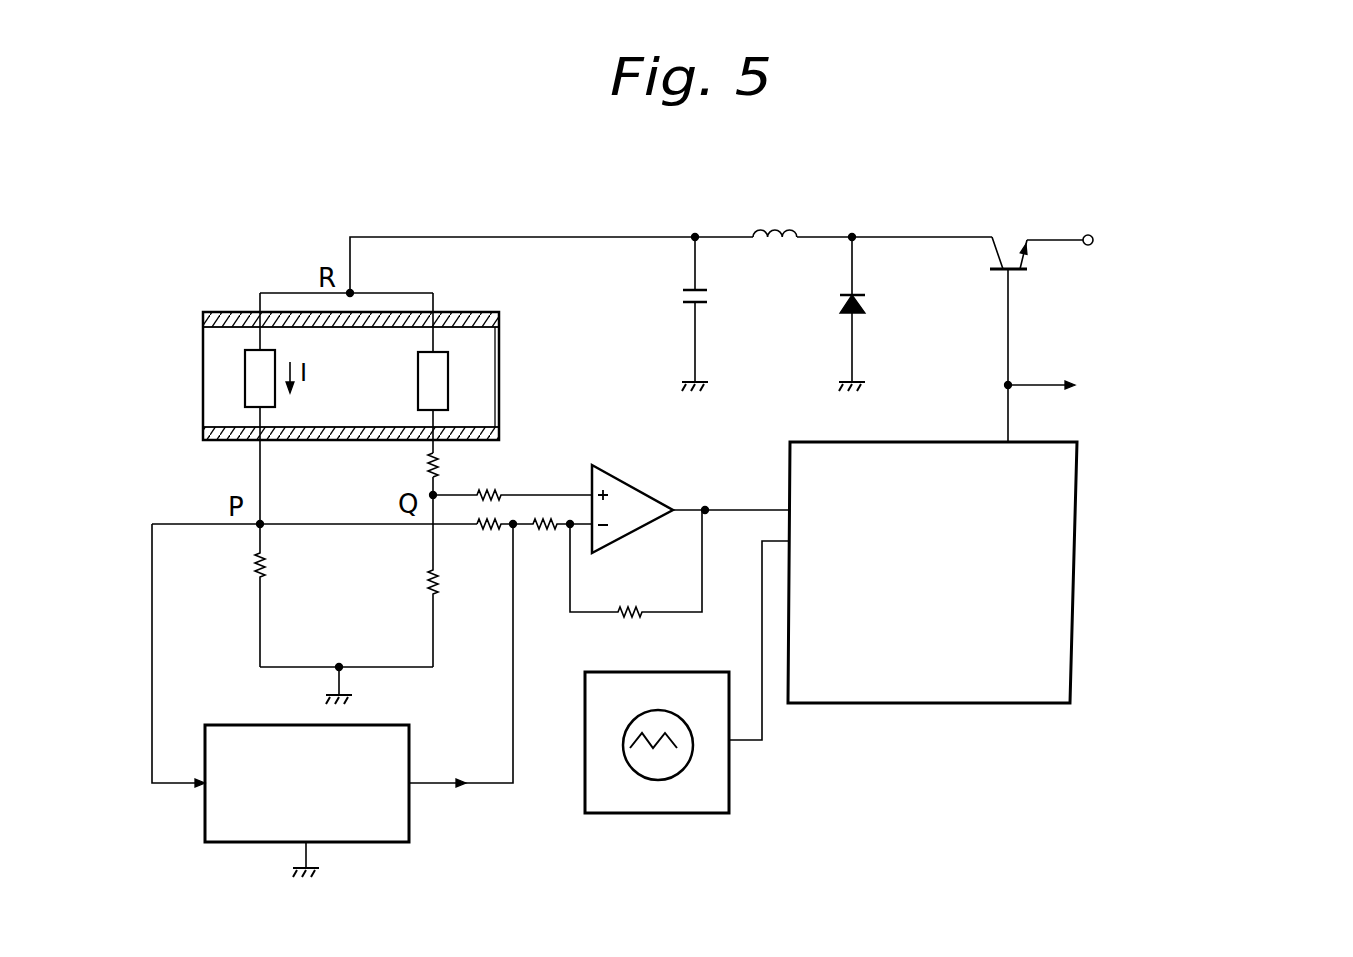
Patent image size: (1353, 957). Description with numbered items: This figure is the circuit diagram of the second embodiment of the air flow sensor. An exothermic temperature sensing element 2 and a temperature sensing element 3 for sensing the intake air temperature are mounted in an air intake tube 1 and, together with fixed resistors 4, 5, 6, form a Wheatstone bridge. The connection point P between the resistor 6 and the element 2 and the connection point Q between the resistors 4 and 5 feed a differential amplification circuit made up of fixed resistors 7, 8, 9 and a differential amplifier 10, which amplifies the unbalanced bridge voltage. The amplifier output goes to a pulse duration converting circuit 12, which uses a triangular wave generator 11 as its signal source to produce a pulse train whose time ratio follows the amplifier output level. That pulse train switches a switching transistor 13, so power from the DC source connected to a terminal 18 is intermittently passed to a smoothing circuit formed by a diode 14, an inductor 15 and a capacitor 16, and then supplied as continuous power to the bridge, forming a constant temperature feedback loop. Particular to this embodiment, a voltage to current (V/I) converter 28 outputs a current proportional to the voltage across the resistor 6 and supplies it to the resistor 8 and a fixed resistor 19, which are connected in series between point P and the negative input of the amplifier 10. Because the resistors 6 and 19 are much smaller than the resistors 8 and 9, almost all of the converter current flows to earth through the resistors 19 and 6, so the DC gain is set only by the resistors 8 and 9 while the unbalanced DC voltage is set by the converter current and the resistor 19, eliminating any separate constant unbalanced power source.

The air intake tube 1 is at (470, 313).
The exothermic temperature sensing element 2 is at (247, 380).
The temperature sensing element 3 is at (448, 380).
The fixed resistor 4 is at (428, 466).
The fixed resistor 5 is at (428, 585).
The fixed resistor 6 is at (265, 563).
The fixed resistor 7 is at (492, 487).
The fixed resistor 8 is at (547, 530).
The fixed resistor 9 is at (632, 618).
The differential amplifier 10 is at (638, 486).
The triangular wave generator 11 is at (668, 813).
The pulse duration converting circuit 12 is at (1073, 624).
The switching transistor 13 is at (1017, 275).
The diode 14 is at (866, 304).
The inductor 15 is at (782, 226).
The capacitor 16 is at (709, 295).
The terminal 18 is at (1092, 235).
The fixed resistor 19 is at (490, 530).
The voltage to current (V/I) converter 28 is at (409, 832).